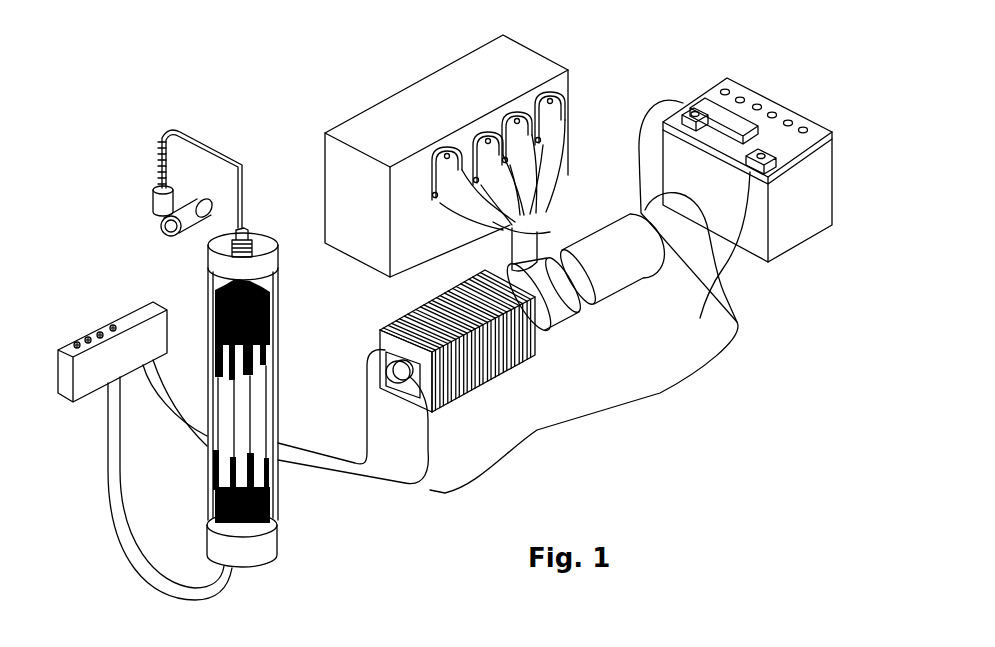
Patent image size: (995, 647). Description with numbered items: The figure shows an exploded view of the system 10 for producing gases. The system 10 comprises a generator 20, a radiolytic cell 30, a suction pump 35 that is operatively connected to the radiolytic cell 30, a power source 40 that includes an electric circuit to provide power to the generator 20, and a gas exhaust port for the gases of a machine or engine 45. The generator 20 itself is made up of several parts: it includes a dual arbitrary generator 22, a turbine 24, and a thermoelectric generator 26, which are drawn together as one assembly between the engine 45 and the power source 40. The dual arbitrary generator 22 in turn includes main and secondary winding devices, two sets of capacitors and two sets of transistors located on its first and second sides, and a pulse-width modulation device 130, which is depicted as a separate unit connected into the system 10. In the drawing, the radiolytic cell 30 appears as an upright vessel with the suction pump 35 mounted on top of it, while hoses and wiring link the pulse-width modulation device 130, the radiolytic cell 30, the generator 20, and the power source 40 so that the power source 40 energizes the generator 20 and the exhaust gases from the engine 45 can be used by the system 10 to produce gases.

The system for producing gases 10 is at (395, 62).
The dual arbitrary generator 20 is at (599, 352).
The dual arbitrary generator 22 is at (613, 277).
The turbine 24 is at (533, 297).
The thermoelectric generator 26 is at (535, 353).
The radiolytic cell 30 is at (290, 490).
The suction pump 35 is at (200, 210).
The power source 40 is at (813, 215).
The machine or engine 45 is at (570, 120).
The pulse-width modulation device 130 is at (95, 363).